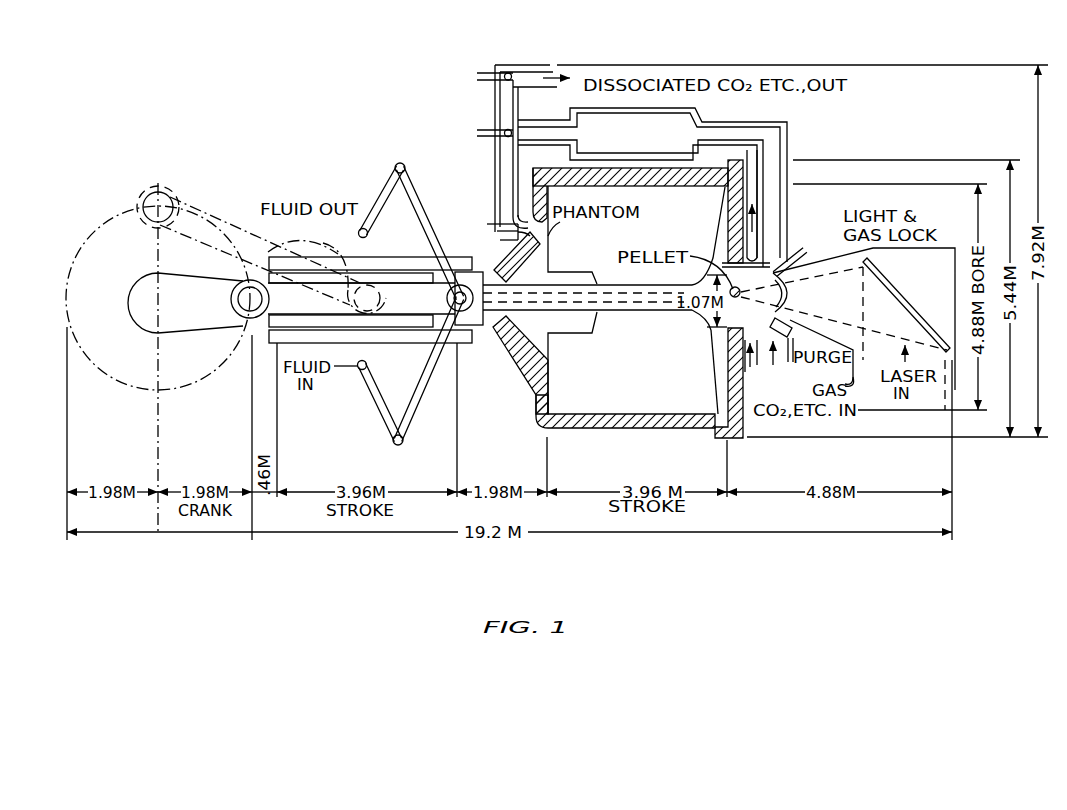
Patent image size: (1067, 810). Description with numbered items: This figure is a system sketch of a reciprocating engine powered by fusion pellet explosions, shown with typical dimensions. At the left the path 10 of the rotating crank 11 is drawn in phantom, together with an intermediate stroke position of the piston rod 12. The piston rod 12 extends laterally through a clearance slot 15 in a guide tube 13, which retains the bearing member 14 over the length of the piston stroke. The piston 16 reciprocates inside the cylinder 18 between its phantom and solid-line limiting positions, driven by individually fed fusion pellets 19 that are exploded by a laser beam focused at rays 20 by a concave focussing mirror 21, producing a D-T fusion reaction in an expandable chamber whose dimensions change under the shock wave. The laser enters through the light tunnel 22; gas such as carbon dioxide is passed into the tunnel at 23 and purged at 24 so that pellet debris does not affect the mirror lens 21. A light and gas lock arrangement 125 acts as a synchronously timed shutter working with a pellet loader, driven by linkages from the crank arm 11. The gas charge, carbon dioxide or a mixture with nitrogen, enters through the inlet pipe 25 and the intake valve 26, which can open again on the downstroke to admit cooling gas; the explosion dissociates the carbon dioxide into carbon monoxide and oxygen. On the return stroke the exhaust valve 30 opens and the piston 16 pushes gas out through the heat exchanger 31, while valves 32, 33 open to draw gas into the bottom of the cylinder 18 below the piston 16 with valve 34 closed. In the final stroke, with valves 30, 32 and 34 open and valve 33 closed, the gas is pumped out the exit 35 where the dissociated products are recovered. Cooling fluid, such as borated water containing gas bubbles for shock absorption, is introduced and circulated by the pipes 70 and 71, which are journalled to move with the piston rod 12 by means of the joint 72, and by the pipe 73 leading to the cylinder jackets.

The path of rotating crank 10 is at (100, 234).
The rotating crank 11 is at (188, 330).
The piston rod 12 is at (328, 284).
The guide tube 13 is at (390, 344).
The bearing member 14 is at (478, 270).
The clearance slot 15 is at (418, 262).
The piston 16 is at (717, 408).
The cylinder 18 is at (606, 414).
The fusion pellet 19 is at (691, 260).
The laser beam rays 20 is at (808, 292).
The concave focussing mirror 21 is at (920, 305).
The light tunnel 22 is at (855, 382).
The gas inlet to light tunnel 23 is at (861, 389).
The purge outlet 24 is at (815, 379).
The inlet pipe 25 is at (762, 368).
The intake valve 26 is at (795, 326).
The exhaust valve 30 is at (786, 262).
The heat exchanger 31 is at (690, 125).
The valve 32 is at (477, 133).
The valve 33 is at (490, 224).
The valve 34 is at (477, 73).
The exit 35 is at (540, 74).
The pipe 70 is at (386, 190).
The pipe 71 is at (378, 404).
The joint 72 is at (462, 330).
The pipe 73 is at (728, 357).
The light and gas lock arrangement 125 is at (800, 278).